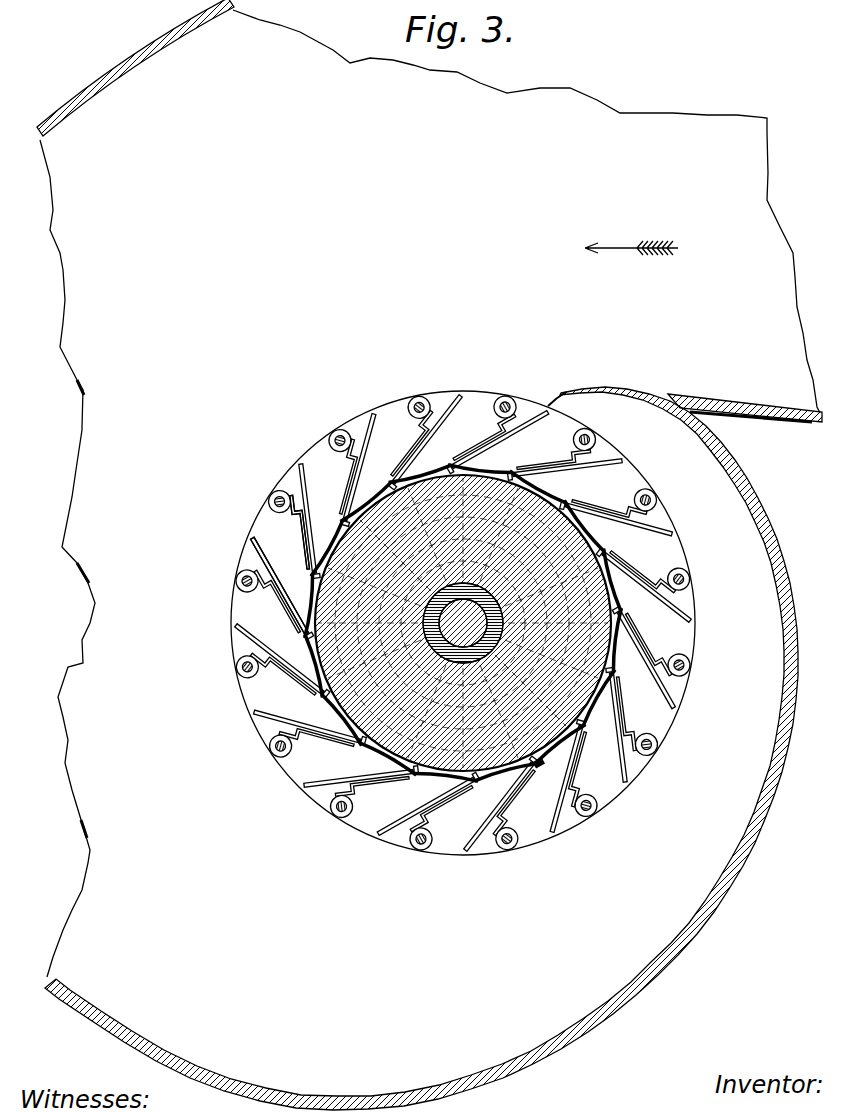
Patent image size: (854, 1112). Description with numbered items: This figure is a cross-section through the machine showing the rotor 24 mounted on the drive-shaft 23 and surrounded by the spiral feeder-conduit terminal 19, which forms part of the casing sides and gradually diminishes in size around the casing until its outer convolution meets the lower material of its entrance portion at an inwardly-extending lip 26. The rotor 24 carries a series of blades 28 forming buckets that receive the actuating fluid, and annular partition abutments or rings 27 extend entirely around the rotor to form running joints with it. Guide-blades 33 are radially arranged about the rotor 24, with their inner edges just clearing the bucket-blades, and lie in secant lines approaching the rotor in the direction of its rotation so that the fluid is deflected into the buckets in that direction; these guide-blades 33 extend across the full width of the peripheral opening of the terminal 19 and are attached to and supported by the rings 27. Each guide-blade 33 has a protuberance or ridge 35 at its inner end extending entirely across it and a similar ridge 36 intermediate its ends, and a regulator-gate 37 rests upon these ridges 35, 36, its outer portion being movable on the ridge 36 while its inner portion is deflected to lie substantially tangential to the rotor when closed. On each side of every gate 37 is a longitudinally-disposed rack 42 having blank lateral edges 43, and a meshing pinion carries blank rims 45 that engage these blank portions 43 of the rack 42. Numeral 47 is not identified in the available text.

The feeder-conduit terminal 19 is at (429, 555).
The drive-shaft 23 is at (463, 623).
The rotor 24 is at (463, 623).
The inwardly-extending lip 26 is at (584, 393).
The annular partition abutments or rings 27 is at (688, 745).
The blades 28 is at (503, 760).
The guide-blades 33 is at (368, 788).
The protuberance or ridge 35 is at (538, 772).
The protuberance or ridge 36 is at (338, 789).
The regulator-gate 37 is at (307, 570).
The rack 42 is at (278, 600).
The blank longitudinal portions or lateral edges 43 is at (292, 532).
The blank rims 45 is at (354, 808).
The pivot bearing 47 is at (530, 796).